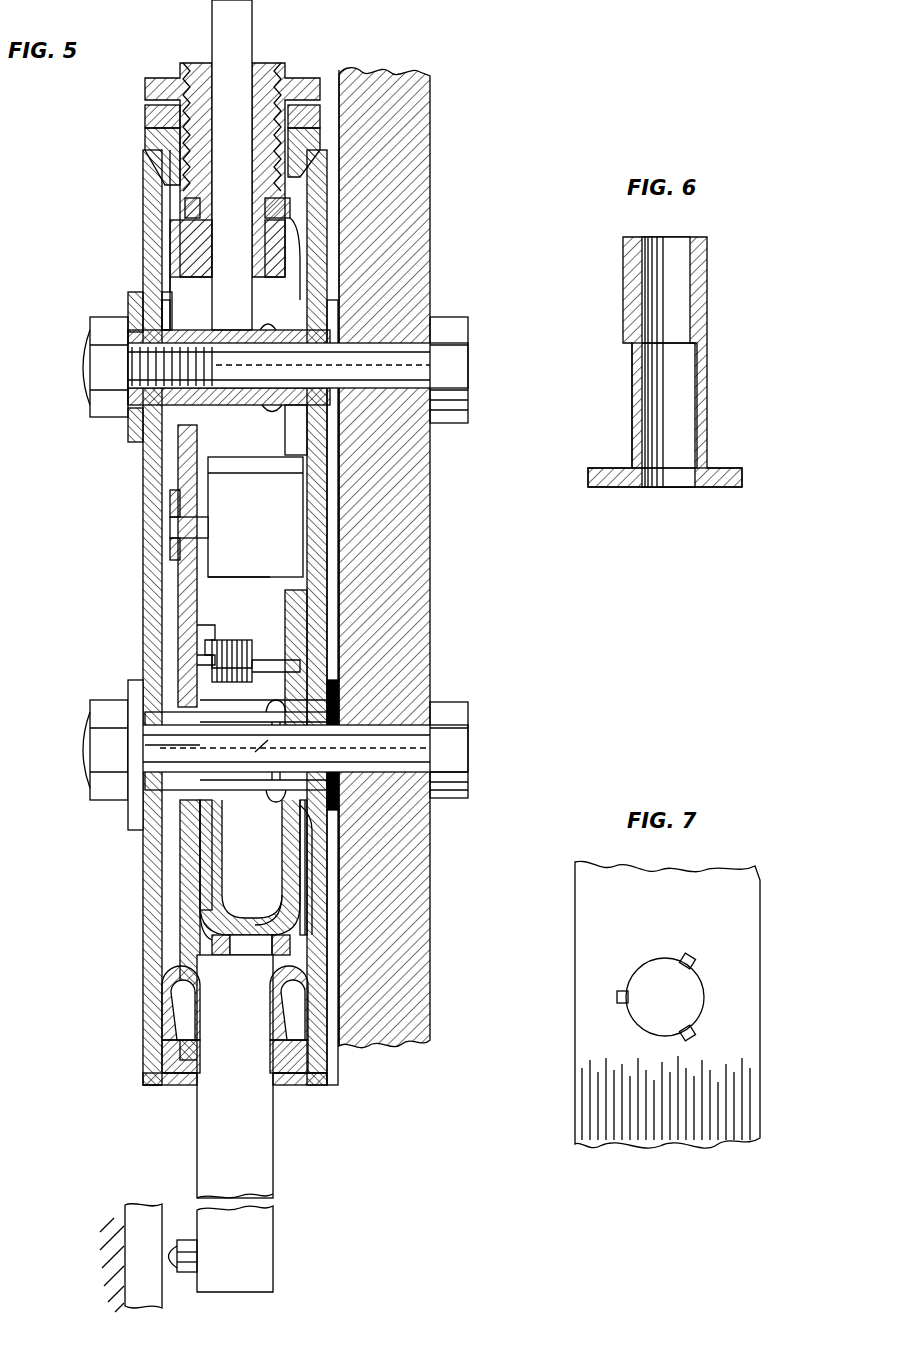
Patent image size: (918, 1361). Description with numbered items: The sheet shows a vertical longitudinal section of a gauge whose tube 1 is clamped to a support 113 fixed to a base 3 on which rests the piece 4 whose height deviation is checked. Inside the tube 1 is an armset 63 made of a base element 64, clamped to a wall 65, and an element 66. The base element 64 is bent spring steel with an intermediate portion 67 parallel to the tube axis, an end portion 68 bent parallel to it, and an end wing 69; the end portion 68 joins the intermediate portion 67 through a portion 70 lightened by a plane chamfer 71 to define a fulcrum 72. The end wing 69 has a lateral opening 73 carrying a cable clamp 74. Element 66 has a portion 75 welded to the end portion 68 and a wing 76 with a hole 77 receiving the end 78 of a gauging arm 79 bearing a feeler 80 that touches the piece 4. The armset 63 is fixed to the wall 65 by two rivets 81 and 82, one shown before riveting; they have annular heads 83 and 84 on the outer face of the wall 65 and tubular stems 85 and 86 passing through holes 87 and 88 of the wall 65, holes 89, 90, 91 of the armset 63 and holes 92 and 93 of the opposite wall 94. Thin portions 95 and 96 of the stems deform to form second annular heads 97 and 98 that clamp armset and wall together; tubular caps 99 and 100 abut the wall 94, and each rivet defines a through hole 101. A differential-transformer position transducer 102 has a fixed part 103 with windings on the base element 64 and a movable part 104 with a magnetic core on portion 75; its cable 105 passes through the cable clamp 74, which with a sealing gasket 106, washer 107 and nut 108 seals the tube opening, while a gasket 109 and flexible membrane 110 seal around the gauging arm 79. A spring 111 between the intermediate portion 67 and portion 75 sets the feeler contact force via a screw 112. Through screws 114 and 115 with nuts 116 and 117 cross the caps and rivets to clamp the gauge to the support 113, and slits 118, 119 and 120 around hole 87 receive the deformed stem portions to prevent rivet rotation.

In FIG. 5, the tube 1 is at (135, 1072).
In FIG. 5, the base 3 is at (108, 1258).
In FIG. 5, the piece 4 is at (140, 1206).
In FIG. 5, the armset 63 is at (178, 935).
In FIG. 5, the base element 64 is at (302, 870).
In FIG. 5, the wall 65 is at (322, 1087).
In FIG. 7, the wall 65 is at (762, 882).
In FIG. 5, the element 66 is at (180, 573).
In FIG. 5, the intermediate portion 67 is at (256, 580).
In FIG. 5, the end portion 68 is at (185, 905).
In FIG. 5, the end wing 69 is at (185, 208).
In FIG. 5, the portion 70 is at (300, 900).
In FIG. 5, the plane chamfer 71 is at (286, 926).
In FIG. 5, the fulcrum 72 is at (250, 867).
In FIG. 5, the lateral opening 73 is at (268, 212).
In FIG. 5, the cable clamp 74 is at (212, 60).
In FIG. 5, the portion 75 is at (195, 925).
In FIG. 5, the wing 76 is at (290, 945).
In FIG. 5, the hole 77 is at (190, 935).
In FIG. 5, the end 78 is at (240, 945).
In FIG. 5, the gauging arm 79 is at (197, 1118).
In FIG. 5, the feeler 80 is at (178, 1270).
In FIG. 5, the rivet 81 is at (238, 800).
In FIG. 6, the rivet 81 is at (708, 280).
In FIG. 5, the rivet 82 is at (195, 320).
In FIG. 5, the annular head 83 is at (332, 695).
In FIG. 6, the annular head 83 is at (616, 488).
In FIG. 5, the annular head 84 is at (333, 332).
In FIG. 5, the tubular stem 85 is at (205, 858).
In FIG. 5, the tubular stem 86 is at (155, 450).
In FIG. 5, the hole 87 is at (330, 815).
In FIG. 7, the hole 87 is at (648, 966).
In FIG. 5, the hole 88 is at (300, 412).
In FIG. 5, the hole 89 is at (306, 855).
In FIG. 5, the hole 90 is at (335, 460).
In FIG. 5, the hole 91 is at (190, 712).
In FIG. 5, the hole 92 is at (140, 805).
In FIG. 5, the hole 93 is at (140, 300).
In FIG. 5, the wall 94 is at (143, 1000).
In FIG. 5, the portion 95 is at (300, 752).
In FIG. 6, the portion 95 is at (707, 390).
In FIG. 5, the portion 96 is at (328, 302).
In FIG. 5, the second annular head 97 is at (268, 732).
In FIG. 5, the second annular head 98 is at (298, 286).
In FIG. 5, the tubular cap 99 is at (160, 755).
In FIG. 5, the tubular cap 100 is at (178, 412).
In FIG. 5, the through hole 101 is at (322, 396).
In FIG. 5, the differential-transformer position transducer 102 is at (306, 610).
In FIG. 5, the fixed part 103 is at (232, 535).
In FIG. 5, the movable part 104 is at (172, 524).
In FIG. 5, the cable 105 is at (253, 30).
In FIG. 5, the sealing gasket 106 is at (145, 138).
In FIG. 5, the washer 107 is at (145, 115).
In FIG. 5, the nut 108 is at (300, 72).
In FIG. 5, the gasket 109 is at (160, 1028).
In FIG. 5, the flexible membrane 110 is at (290, 1082).
In FIG. 5, the spring 111 is at (265, 701).
In FIG. 5, the screw 112 is at (190, 645).
In FIG. 5, the support 113 is at (420, 1040).
In FIG. 5, the through screw 114 is at (468, 758).
In FIG. 5, the through screw 115 is at (468, 344).
In FIG. 5, the nut 116 is at (86, 790).
In FIG. 5, the nut 117 is at (88, 332).
In FIG. 7, the slit 118 is at (694, 960).
In FIG. 7, the slit 119 is at (694, 1032).
In FIG. 7, the slit 120 is at (624, 1003).